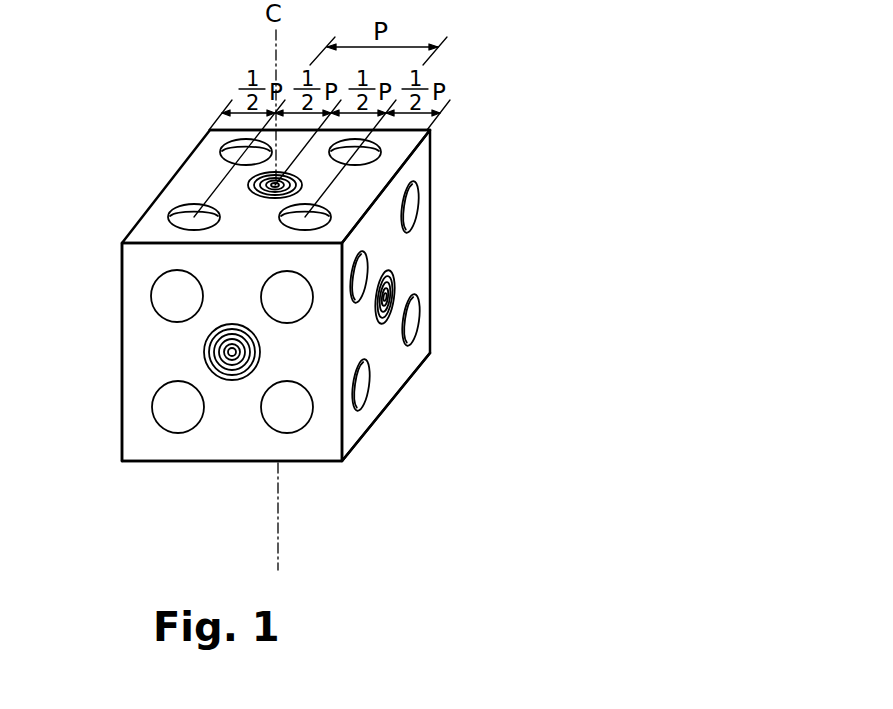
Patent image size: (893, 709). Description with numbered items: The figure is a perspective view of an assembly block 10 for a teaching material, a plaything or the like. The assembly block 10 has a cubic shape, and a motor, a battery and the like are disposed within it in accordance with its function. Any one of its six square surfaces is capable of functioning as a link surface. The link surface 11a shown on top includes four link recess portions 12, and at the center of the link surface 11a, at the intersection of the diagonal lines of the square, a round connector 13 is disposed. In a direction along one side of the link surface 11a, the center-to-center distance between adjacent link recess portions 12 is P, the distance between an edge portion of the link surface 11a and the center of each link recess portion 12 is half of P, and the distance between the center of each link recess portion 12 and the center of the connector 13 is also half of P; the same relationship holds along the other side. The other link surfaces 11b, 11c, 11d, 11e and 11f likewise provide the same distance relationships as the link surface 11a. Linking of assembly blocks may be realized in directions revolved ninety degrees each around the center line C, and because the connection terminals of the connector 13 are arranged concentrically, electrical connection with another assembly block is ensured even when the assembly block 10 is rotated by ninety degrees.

The assembly block 10 is at (473, 93).
The link surface 11a is at (197, 180).
The link surface 11b is at (140, 342).
The link surface 11c is at (415, 285).
The link surface 11d is at (357, 433).
The link surface 11e is at (140, 408).
The link surface 11f is at (397, 257).
The link recess portion 12 is at (220, 150).
The connector 13 is at (258, 196).